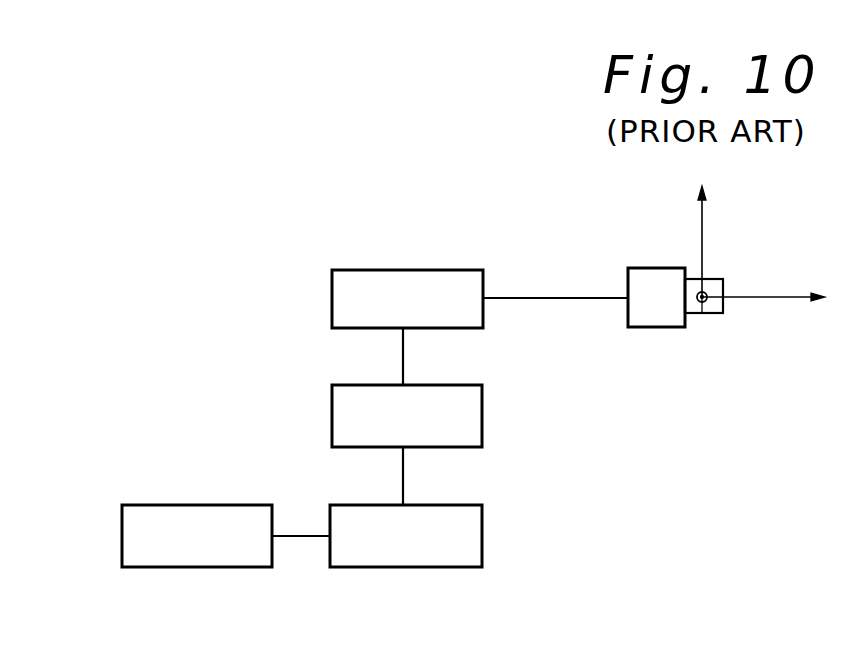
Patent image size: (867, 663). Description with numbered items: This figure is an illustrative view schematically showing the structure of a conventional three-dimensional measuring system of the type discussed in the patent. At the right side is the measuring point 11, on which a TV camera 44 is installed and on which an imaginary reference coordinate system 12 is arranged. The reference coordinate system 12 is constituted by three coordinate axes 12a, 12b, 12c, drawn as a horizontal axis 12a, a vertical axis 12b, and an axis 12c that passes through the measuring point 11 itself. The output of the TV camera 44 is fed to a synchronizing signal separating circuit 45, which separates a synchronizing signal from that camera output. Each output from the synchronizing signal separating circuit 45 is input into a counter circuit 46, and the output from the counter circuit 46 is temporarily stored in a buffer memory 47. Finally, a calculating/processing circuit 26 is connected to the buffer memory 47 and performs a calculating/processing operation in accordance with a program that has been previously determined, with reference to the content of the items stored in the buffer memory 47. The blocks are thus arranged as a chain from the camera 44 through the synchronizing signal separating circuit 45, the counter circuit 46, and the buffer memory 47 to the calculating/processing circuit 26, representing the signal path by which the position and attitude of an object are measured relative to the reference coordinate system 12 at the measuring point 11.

The calculating/processing circuit 26 is at (229, 505).
The synchronizing signal separating circuit 45 is at (448, 270).
The counter circuit 46 is at (460, 385).
The buffer memory 47 is at (462, 505).
The TV camera 44 is at (666, 268).
The reference coordinate system 12 is at (730, 268).
The coordinate axis 12a is at (792, 295).
The coordinate axis 12b is at (705, 206).
The coordinate axis 12c is at (705, 305).
The measuring point 11 is at (700, 304).